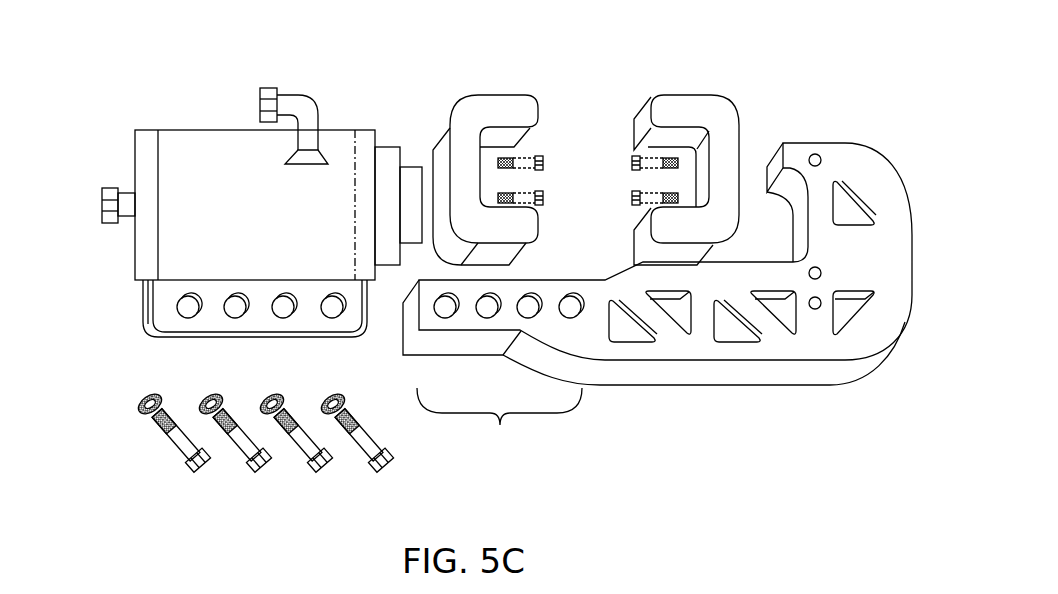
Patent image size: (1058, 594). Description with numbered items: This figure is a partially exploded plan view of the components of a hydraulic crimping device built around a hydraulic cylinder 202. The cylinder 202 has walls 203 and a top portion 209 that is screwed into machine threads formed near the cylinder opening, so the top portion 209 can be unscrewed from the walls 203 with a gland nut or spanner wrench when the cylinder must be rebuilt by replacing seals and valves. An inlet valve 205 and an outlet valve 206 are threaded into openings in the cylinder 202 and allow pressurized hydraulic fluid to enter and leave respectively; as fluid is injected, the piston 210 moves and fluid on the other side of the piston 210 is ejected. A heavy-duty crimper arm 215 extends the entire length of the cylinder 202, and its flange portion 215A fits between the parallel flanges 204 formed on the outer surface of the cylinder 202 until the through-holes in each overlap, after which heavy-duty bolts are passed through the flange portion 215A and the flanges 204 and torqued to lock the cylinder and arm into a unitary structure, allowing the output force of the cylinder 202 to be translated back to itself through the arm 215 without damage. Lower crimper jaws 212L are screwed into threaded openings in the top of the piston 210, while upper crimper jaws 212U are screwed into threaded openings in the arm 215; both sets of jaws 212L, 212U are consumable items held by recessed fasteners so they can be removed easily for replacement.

The cylinder 202 is at (150, 92).
The walls 203 is at (228, 142).
The flanges 204 is at (162, 308).
The inlet valve 205 is at (110, 187).
The outlet valve 206 is at (293, 92).
The top portion 209 is at (360, 272).
The piston 210 is at (418, 167).
The lower crimper jaws 212L is at (510, 95).
The upper crimper jaws 212U is at (683, 95).
The crimper arm 215 is at (888, 317).
The flange portion 215A is at (500, 425).